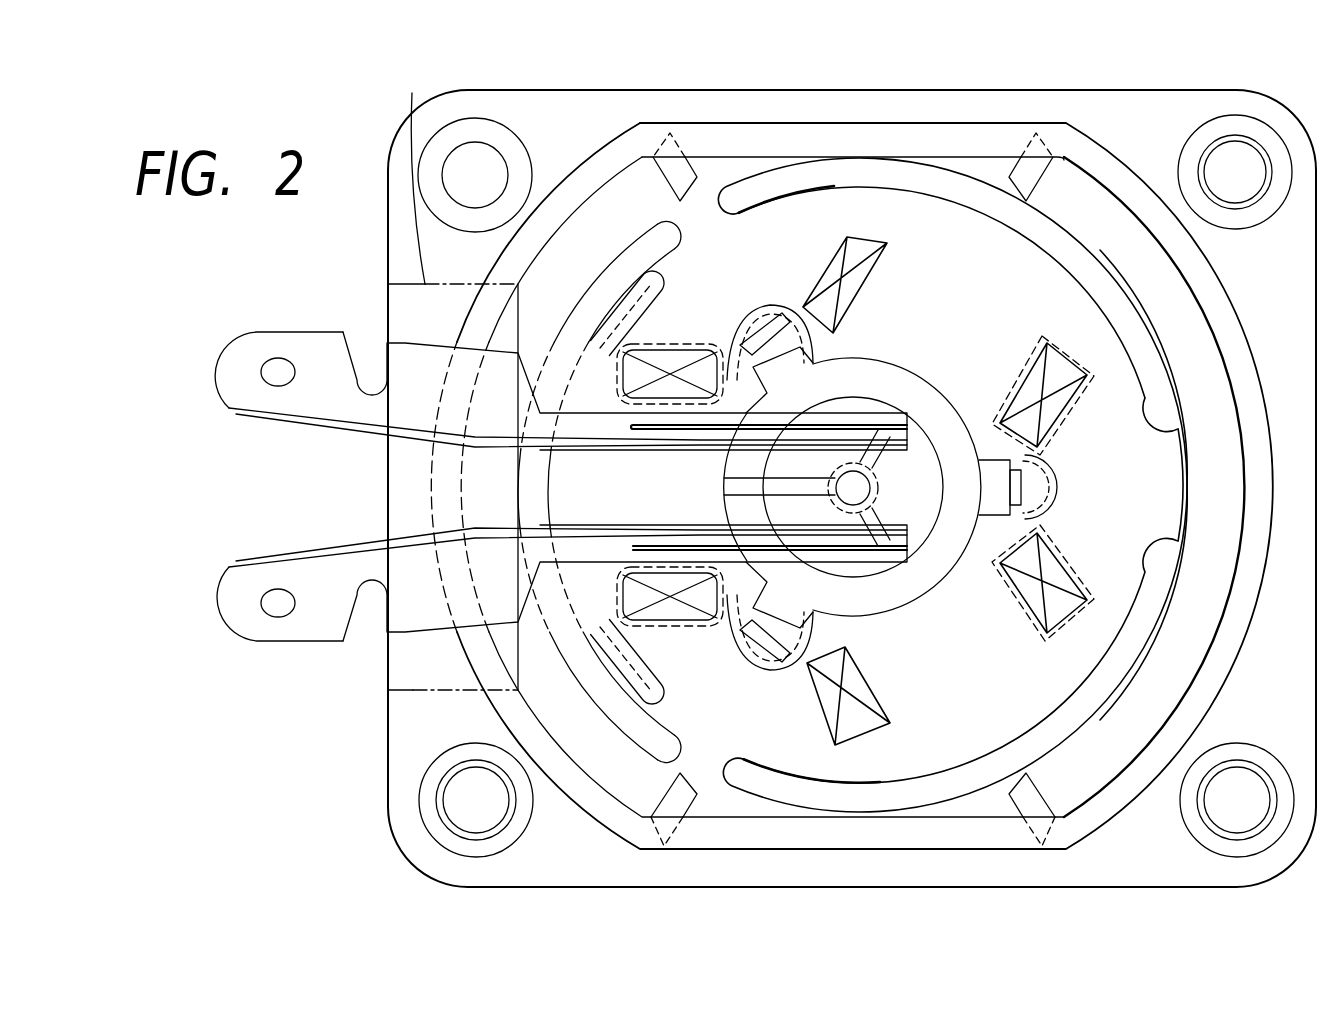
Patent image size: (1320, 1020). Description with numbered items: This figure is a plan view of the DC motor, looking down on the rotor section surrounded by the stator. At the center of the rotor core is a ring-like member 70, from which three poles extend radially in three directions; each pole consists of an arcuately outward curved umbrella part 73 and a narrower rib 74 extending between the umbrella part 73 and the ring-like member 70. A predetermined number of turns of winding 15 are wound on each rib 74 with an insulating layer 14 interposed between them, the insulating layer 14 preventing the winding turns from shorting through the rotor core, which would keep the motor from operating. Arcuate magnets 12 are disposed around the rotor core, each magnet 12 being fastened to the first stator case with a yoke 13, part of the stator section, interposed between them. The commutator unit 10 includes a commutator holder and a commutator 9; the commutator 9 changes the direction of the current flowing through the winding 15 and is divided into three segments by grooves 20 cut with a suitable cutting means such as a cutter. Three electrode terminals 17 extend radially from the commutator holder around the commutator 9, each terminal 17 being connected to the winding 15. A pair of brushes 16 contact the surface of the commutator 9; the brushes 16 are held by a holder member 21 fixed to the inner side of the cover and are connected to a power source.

The commutator 9 is at (870, 572).
The commutator unit 10 is at (968, 563).
The arcuate magnet 12 is at (1182, 287).
The yoke 13 is at (1072, 137).
The insulating layer 14 is at (1143, 330).
The winding 15 is at (697, 352).
The brush 16 is at (270, 407).
The electrode terminal 17 is at (767, 340).
The groove 20 is at (918, 405).
The holder member 21 is at (412, 93).
The ring-like member 70 is at (1037, 450).
The umbrella part 73 is at (883, 172).
The rib 74 is at (915, 243).